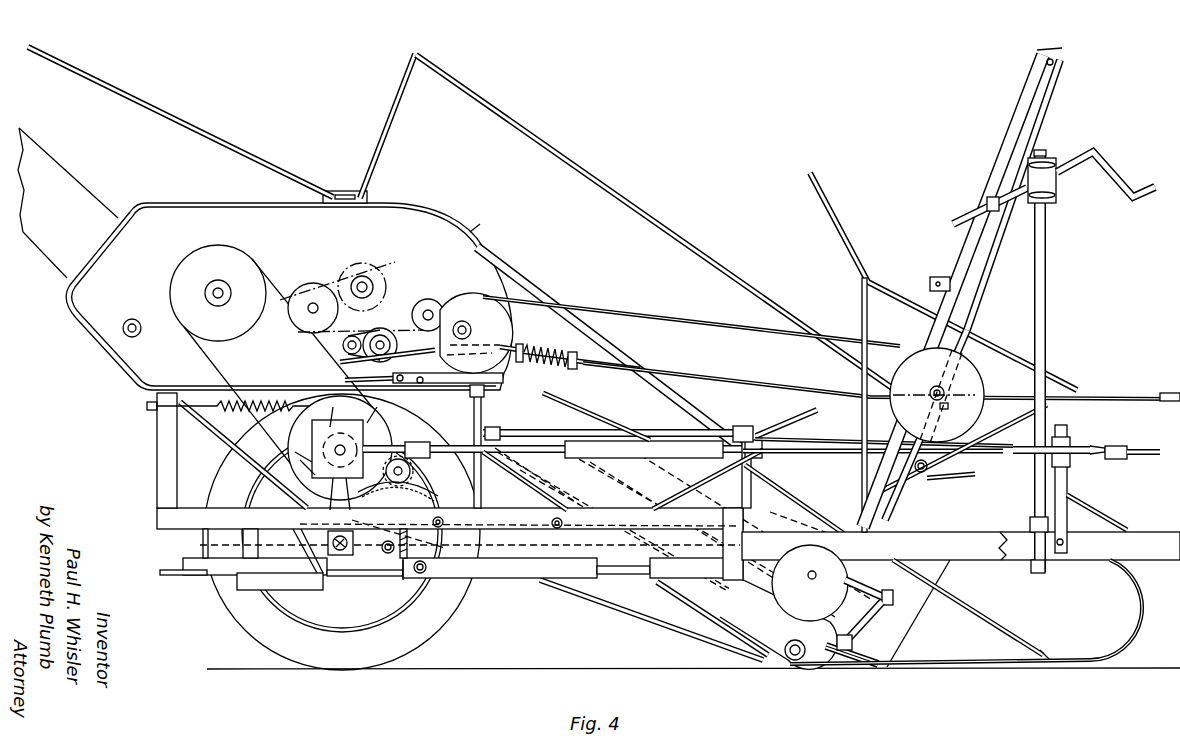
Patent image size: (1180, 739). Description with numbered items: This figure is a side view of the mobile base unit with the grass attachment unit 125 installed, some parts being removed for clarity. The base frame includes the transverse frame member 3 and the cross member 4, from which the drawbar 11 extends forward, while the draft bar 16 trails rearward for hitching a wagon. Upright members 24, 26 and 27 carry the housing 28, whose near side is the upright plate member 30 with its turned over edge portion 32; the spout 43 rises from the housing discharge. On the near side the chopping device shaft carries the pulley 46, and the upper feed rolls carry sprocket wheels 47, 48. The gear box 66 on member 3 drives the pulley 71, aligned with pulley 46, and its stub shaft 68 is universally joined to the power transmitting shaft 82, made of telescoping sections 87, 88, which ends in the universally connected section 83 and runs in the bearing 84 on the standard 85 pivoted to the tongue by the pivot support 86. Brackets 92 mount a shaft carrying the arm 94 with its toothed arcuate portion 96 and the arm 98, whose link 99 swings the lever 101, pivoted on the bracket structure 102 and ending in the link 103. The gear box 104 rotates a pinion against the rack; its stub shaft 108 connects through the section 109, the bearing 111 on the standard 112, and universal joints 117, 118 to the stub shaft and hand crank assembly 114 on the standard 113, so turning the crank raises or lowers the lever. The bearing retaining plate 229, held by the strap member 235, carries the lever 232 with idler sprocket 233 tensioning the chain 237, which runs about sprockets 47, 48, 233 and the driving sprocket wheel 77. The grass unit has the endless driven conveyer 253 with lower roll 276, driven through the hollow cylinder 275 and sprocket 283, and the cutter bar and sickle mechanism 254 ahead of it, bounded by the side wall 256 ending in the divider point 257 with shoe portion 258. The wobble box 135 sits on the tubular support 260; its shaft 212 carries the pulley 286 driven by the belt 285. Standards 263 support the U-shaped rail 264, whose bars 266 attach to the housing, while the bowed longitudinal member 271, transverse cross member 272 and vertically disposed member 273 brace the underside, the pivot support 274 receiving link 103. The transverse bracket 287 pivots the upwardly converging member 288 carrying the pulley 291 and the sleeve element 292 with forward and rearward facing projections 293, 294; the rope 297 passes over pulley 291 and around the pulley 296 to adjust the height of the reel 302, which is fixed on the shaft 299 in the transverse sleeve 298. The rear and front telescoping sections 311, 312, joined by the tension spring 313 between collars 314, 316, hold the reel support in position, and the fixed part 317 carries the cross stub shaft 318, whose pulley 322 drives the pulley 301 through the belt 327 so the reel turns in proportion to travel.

The transverse frame member 3 is at (340, 556).
The cross member 4 is at (642, 518).
The drawbar 11 is at (961, 535).
The draft bar 16 is at (517, 579).
The upwardly extending member 24 is at (158, 450).
The upwardly extending member 26 is at (225, 462).
The upwardly extending member 27 is at (481, 484).
The housing 28 is at (171, 243).
The upright plate member 30 is at (460, 231).
The turned over edge portion 32 is at (438, 200).
The spout 43 is at (92, 192).
The pulley 46 is at (170, 290).
The sprocket wheel 47 is at (300, 290).
The sprocket wheel 48 is at (368, 276).
The gear box 66 is at (340, 448).
The stub shaft 68 is at (387, 471).
The pulley 71 is at (290, 455).
The sprocket wheel 77 is at (430, 300).
The power transmitting shaft 82 is at (570, 458).
The universally connected section 83 is at (1140, 450).
The bearing 84 is at (1068, 448).
The standard 85 is at (1068, 490).
The pivot support 86 is at (1064, 544).
The telescoping section 87 is at (632, 458).
The telescoping section 88 is at (838, 457).
The rigid bracket 92 is at (380, 580).
The arm 94 is at (390, 522).
The arcuate portion 96 is at (436, 500).
The arm 98 is at (420, 580).
The link 99 is at (420, 549).
The lever 101 is at (456, 569).
The bracket structure 102 is at (330, 516).
The link 103 is at (550, 524).
The gear box 104 is at (407, 489).
The stub shaft 108 is at (486, 428).
The forwardly projecting section 109 is at (586, 416).
The bearing 111 is at (740, 425).
The standard 112 is at (752, 462).
The standard 113 is at (1046, 330).
The stub shaft and hand crank assembly 114 is at (1090, 146).
The universal joint 117 is at (778, 424).
The universal joint 118 is at (985, 203).
The grass attachment unit 125 is at (584, 286).
The wobble box 135 is at (848, 578).
The shaft 212 is at (810, 583).
The bearing retaining plate 229 is at (382, 328).
The lever 232 is at (490, 397).
The idler sprocket 233 is at (400, 380).
The strap member 235 is at (343, 380).
The chain 237 is at (338, 268).
The endless driven conveyer 253 is at (765, 655).
The cutter bar and sickle mechanism 254 is at (855, 641).
The side wall 256 is at (938, 588).
The divider point 257 is at (1015, 642).
The shoe portion 258 is at (1028, 668).
The tubular support 260 is at (848, 668).
The standard 263 is at (852, 440).
The U-shaped rail 264 is at (612, 192).
The bar 266 is at (392, 104).
The bowed longitudinal member 271 is at (628, 612).
The transverse cross member 272 is at (730, 648).
The vertically disposed member 273 is at (545, 546).
The pivot support 274 is at (545, 498).
The hollow cylinder 275 is at (356, 336).
The lower roll 276 is at (793, 662).
The sprocket 283 is at (338, 361).
The belt 285 is at (708, 480).
The pulley 286 is at (792, 540).
The transverse bracket 287 is at (815, 521).
The upwardly converging member 288 is at (975, 262).
The pulley 291 is at (1058, 66).
The sleeve element 292 is at (962, 302).
The forward facing projection 293 is at (930, 482).
The rearward facing projection 294 is at (930, 282).
The pulley 296 is at (925, 474).
The rope 297 is at (1000, 130).
The transverse sleeve 298 is at (937, 395).
The shaft 299 is at (961, 402).
The pulley 301 is at (972, 436).
The reel 302 is at (902, 236).
The rear telescoping section 311 is at (521, 343).
The front telescoping section 312 is at (768, 384).
The tension spring 313 is at (538, 352).
The collar 314 is at (567, 366).
The collar 316 is at (588, 366).
The fixed part 317 is at (468, 318).
The cross stub shaft 318 is at (479, 330).
The pulley 322 is at (466, 300).
The belt 327 is at (690, 315).